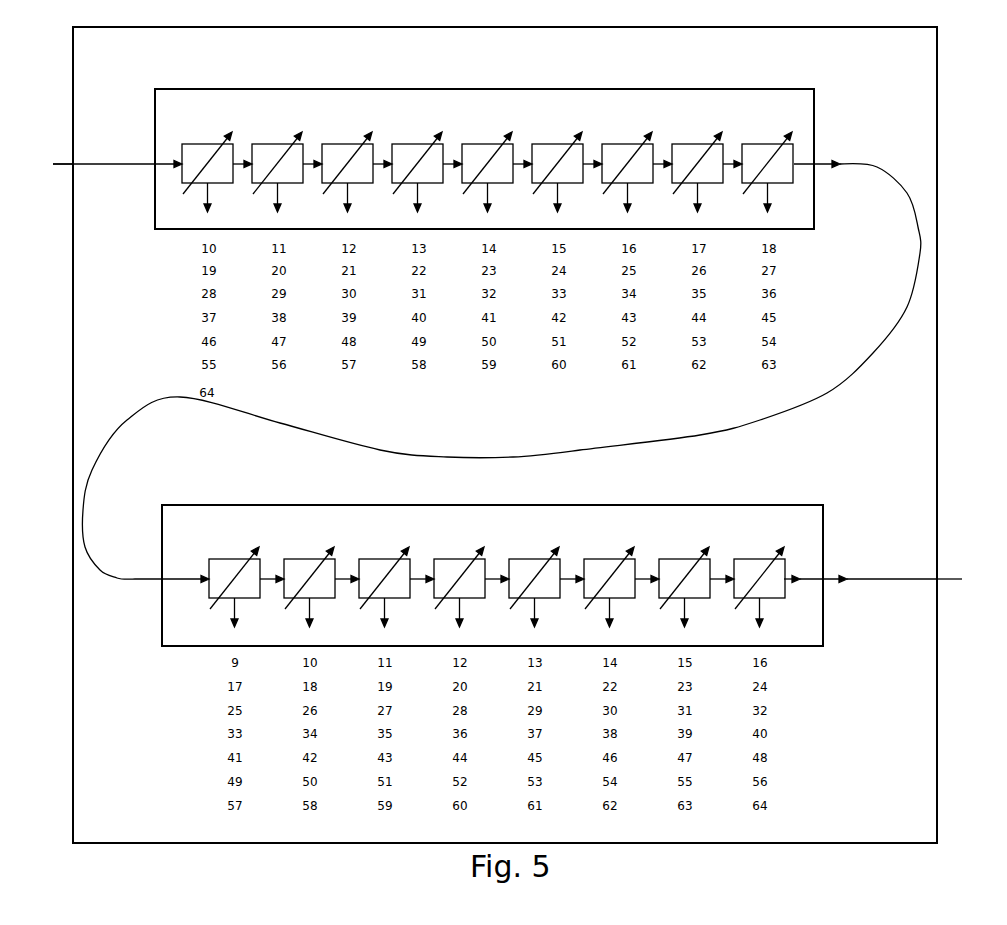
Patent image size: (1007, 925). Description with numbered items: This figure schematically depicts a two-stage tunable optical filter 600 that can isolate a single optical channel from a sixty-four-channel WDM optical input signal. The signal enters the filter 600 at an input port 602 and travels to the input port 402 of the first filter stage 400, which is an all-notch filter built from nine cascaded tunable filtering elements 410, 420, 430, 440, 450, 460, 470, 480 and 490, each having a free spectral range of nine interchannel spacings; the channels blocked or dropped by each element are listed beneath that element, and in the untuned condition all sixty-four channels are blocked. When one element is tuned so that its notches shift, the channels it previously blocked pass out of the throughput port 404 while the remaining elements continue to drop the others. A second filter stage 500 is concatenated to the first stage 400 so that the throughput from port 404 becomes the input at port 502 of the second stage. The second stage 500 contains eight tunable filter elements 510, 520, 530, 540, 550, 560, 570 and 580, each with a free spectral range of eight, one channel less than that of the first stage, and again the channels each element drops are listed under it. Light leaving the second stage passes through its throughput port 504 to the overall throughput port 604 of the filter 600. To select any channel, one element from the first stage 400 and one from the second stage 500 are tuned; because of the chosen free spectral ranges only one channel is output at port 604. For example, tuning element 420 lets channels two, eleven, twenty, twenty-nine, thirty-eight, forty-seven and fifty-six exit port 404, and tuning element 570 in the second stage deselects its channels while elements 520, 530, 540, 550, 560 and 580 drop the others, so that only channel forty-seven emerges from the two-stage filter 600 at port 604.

The first filter stage 400 is at (708, 79).
The input port 402 is at (156, 163).
The throughput port 404 is at (815, 162).
The tunable filtering element 410 is at (200, 143).
The tunable filtering element 420 is at (270, 143).
The tunable filtering element 430 is at (340, 143).
The tunable filtering element 440 is at (410, 143).
The tunable filtering element 450 is at (480, 143).
The tunable filtering element 460 is at (550, 143).
The tunable filtering element 470 is at (620, 143).
The tunable filtering element 480 is at (690, 143).
The tunable filtering element 490 is at (760, 143).
The second filter stage 500 is at (718, 491).
The input port 502 is at (162, 579).
The throughput port 504 is at (823, 578).
The tunable filter element 510 is at (228, 558).
The tunable filter element 520 is at (302, 558).
The tunable filter element 530 is at (378, 558).
The tunable filter element 540 is at (452, 558).
The tunable filter element 550 is at (528, 558).
The tunable filter element 560 is at (602, 558).
The tunable filter element 570 is at (678, 558).
The tunable filter element 580 is at (752, 558).
The two-stage filter 600 is at (937, 186).
The input port 602 is at (73, 165).
The overall throughput port 604 is at (937, 580).